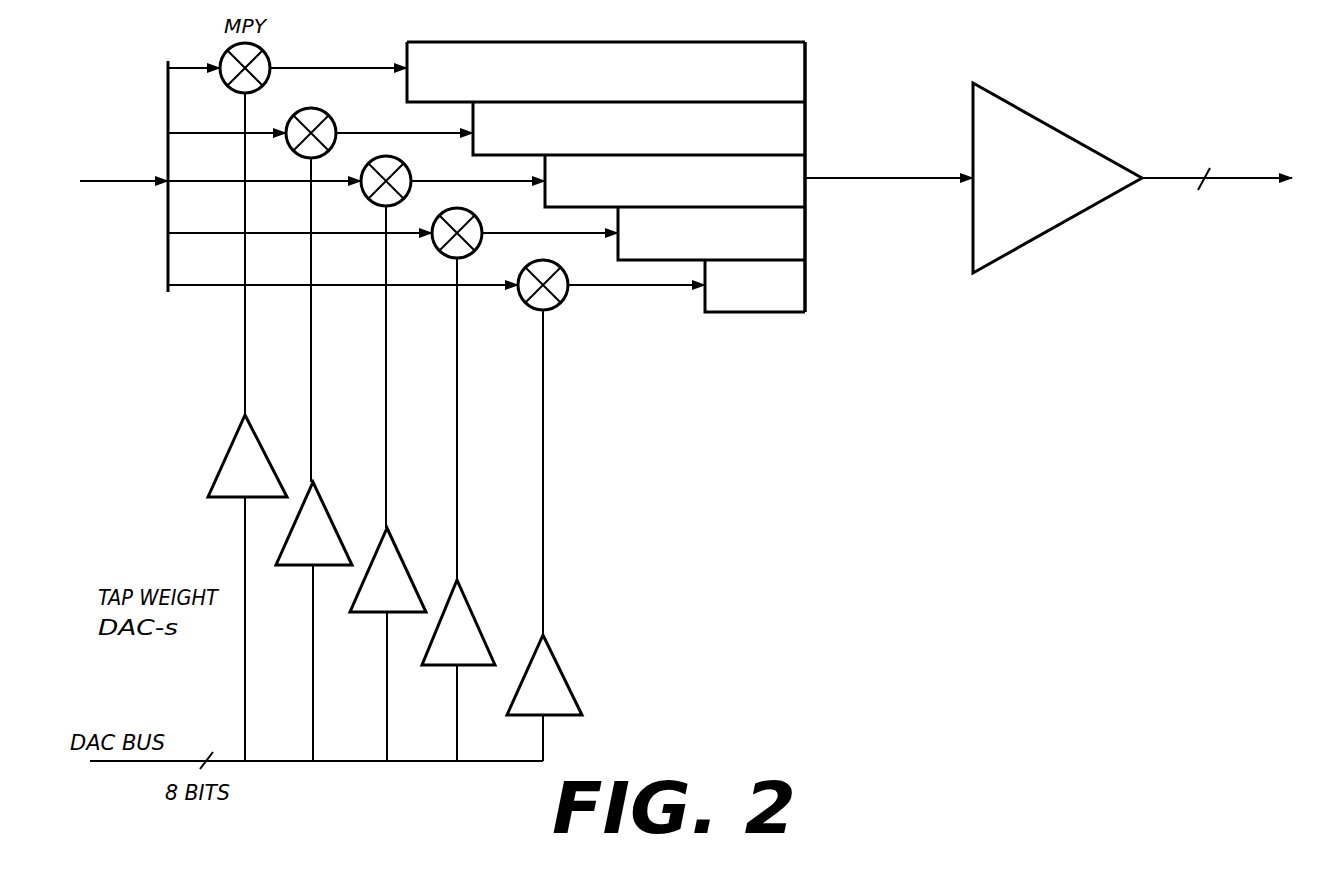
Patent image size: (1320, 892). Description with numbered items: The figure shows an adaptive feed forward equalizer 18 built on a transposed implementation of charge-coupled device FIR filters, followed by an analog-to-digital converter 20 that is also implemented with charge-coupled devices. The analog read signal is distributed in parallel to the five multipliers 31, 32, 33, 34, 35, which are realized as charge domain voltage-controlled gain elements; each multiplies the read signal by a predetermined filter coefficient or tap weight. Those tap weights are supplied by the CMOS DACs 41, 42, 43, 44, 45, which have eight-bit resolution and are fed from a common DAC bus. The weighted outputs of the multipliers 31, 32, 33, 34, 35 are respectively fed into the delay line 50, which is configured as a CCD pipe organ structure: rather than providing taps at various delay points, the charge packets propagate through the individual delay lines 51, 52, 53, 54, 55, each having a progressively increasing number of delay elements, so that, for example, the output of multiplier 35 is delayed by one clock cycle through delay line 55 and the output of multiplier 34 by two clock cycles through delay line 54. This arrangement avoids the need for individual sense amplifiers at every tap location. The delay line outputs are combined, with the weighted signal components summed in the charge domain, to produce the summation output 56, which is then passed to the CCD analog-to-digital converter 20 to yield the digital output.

The adaptive feed forward equalizer 18 is at (663, 450).
The analog-to-digital converter 20 is at (1060, 232).
The multiplier 31 is at (262, 53).
The multiplier 32 is at (329, 117).
The multiplier 33 is at (403, 165).
The multiplier 34 is at (474, 217).
The multiplier 35 is at (560, 269).
The CMOS DAC 41 is at (265, 455).
The CMOS DAC 42 is at (333, 520).
The CMOS DAC 43 is at (407, 567).
The CMOS DAC 44 is at (477, 612).
The CMOS DAC 45 is at (563, 670).
The delay line 50 is at (647, 162).
The delay line 51 is at (602, 85).
The delay line 52 is at (648, 140).
The delay line 53 is at (683, 190).
The delay line 54 is at (727, 243).
The delay line 55 is at (769, 292).
The summation output 56 is at (862, 183).